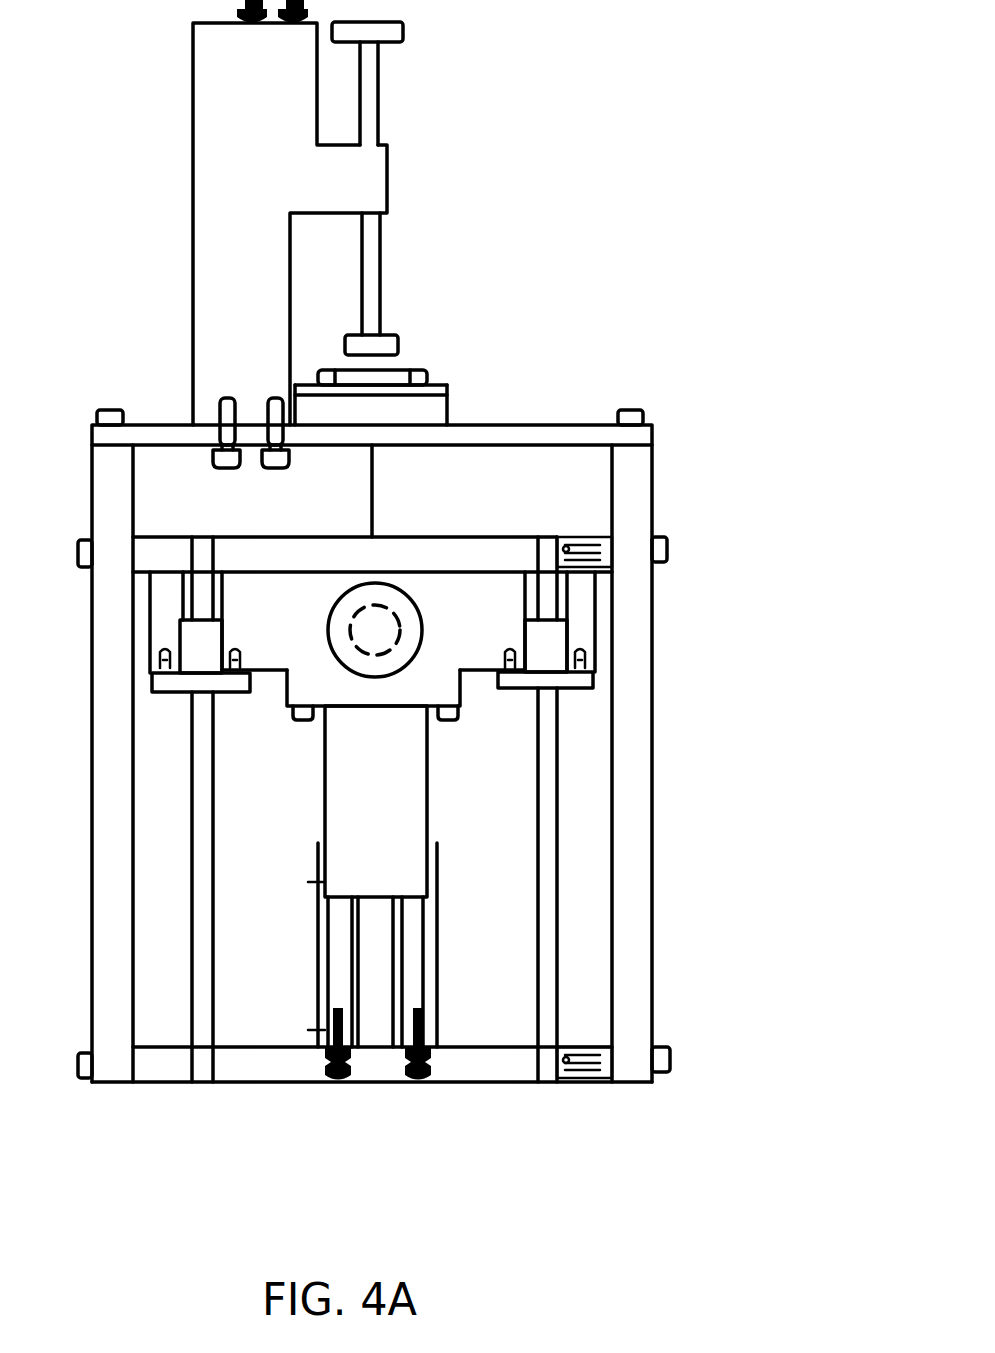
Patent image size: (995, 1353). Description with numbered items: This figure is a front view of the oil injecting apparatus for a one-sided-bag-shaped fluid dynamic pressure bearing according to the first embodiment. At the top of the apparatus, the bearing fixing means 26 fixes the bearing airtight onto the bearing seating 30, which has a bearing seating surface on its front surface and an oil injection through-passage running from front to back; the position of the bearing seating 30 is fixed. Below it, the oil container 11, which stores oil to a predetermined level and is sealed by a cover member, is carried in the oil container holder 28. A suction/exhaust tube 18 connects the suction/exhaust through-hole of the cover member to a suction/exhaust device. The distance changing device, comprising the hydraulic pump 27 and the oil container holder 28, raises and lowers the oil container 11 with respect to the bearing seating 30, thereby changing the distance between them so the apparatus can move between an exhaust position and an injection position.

The oil container 11 is at (388, 804).
The suction/exhaust tube 18 is at (410, 647).
The bearing fixing means 26 is at (368, 298).
The hydraulic pump 27 is at (412, 978).
The oil container holder 28 is at (485, 604).
The bearing seating 30 is at (430, 387).